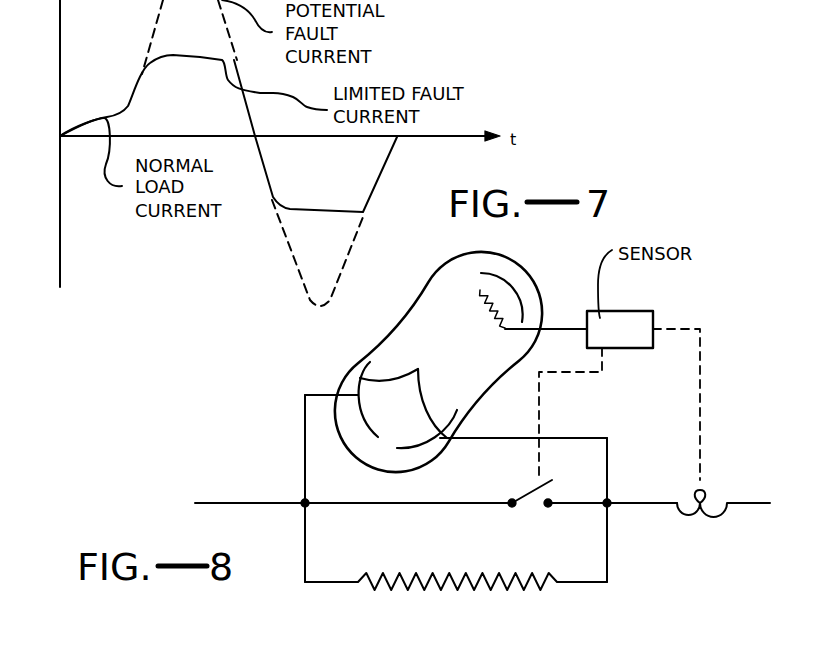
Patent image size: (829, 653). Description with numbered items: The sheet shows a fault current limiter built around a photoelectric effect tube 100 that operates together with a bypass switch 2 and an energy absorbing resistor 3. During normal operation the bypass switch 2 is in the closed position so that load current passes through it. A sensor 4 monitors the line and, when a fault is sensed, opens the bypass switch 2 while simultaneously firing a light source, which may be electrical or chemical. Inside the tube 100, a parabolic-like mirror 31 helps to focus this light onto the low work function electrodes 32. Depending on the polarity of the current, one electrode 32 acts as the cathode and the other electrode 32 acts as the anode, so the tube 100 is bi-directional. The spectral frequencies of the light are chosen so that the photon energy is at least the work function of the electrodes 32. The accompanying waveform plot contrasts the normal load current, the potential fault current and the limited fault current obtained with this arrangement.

The photoelectric effect tube 100 is at (342, 362).
The parabolic-like mirror 31 is at (517, 293).
The electrodes 32 is at (408, 403).
The sensor 4 is at (632, 318).
The bypass switch 2 is at (528, 488).
The energy absorbing resistor 3 is at (447, 578).